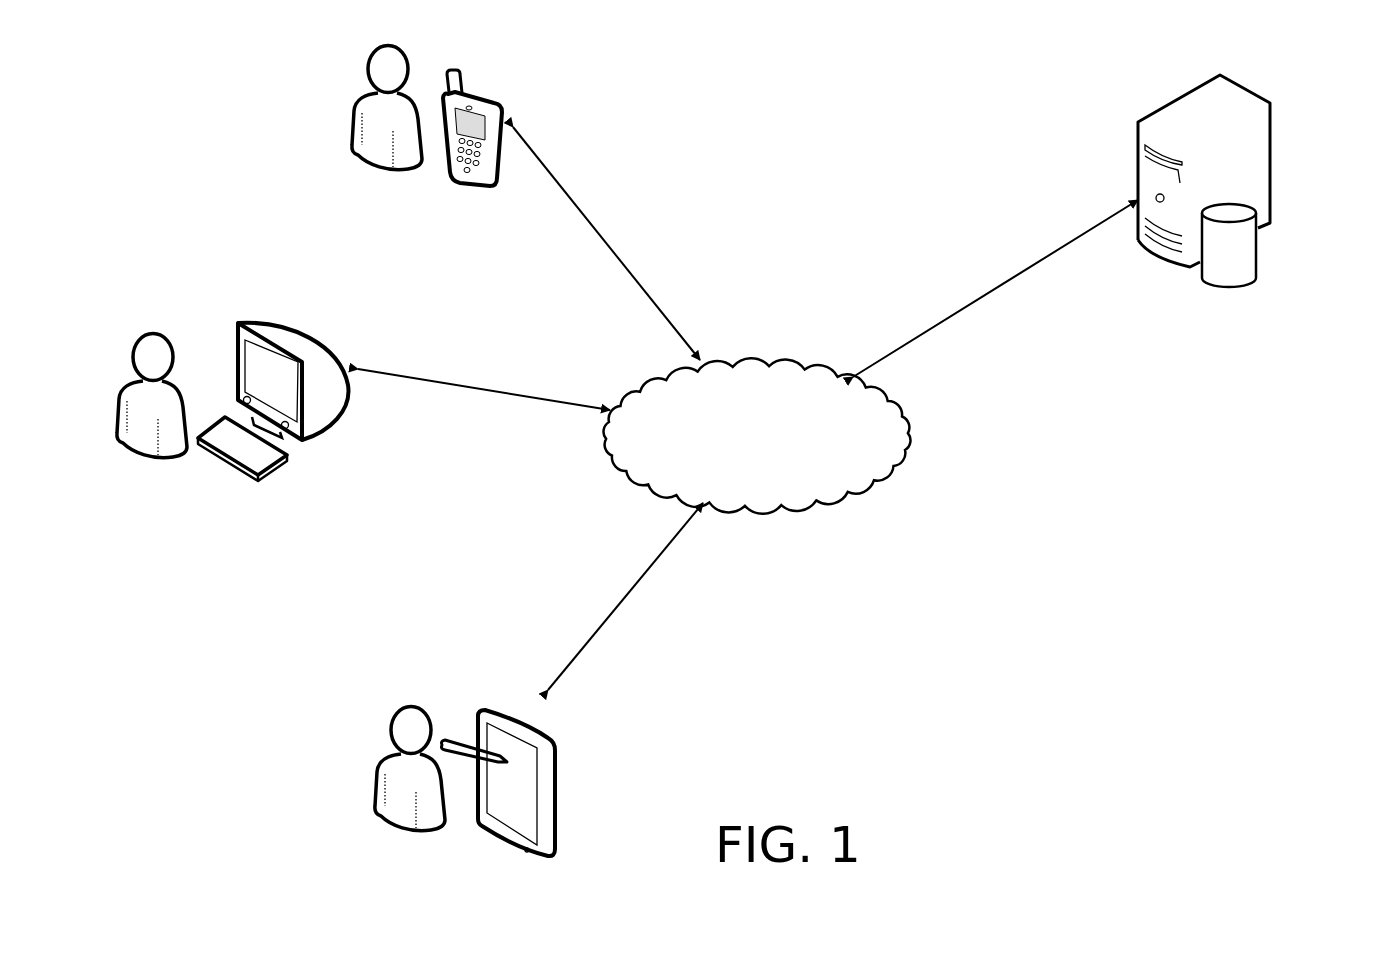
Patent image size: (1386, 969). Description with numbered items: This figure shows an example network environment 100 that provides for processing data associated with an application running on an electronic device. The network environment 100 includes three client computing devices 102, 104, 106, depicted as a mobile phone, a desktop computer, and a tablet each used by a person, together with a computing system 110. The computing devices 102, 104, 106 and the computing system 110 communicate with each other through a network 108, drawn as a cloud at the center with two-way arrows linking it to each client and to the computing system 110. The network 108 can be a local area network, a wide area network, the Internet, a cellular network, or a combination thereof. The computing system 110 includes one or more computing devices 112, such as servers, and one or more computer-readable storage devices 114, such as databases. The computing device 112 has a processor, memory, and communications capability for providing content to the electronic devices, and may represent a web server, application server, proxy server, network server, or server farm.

The network environment 100 is at (889, 90).
The computing device 102 is at (483, 100).
The computing device 104 is at (317, 340).
The computing device 106 is at (548, 740).
The network 108 is at (757, 364).
The computing system 110 is at (1138, 312).
The computing device 112 is at (1248, 90).
The computer-readable storage device 114 is at (1257, 280).